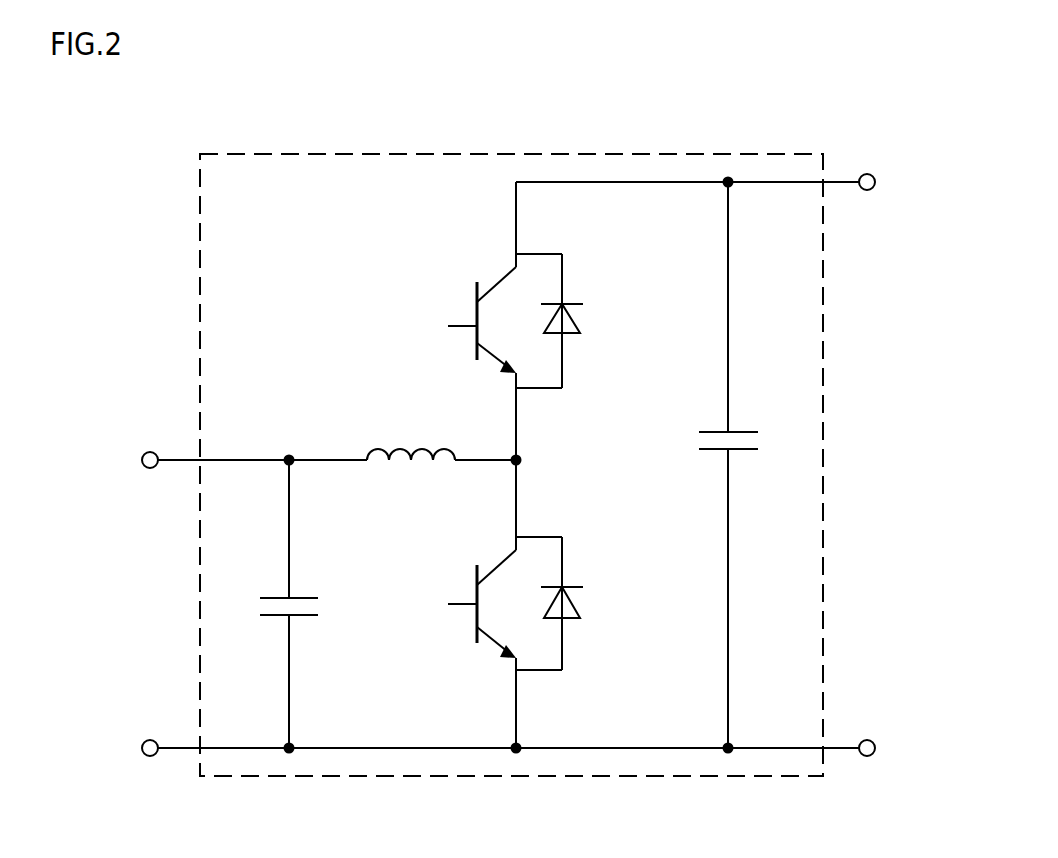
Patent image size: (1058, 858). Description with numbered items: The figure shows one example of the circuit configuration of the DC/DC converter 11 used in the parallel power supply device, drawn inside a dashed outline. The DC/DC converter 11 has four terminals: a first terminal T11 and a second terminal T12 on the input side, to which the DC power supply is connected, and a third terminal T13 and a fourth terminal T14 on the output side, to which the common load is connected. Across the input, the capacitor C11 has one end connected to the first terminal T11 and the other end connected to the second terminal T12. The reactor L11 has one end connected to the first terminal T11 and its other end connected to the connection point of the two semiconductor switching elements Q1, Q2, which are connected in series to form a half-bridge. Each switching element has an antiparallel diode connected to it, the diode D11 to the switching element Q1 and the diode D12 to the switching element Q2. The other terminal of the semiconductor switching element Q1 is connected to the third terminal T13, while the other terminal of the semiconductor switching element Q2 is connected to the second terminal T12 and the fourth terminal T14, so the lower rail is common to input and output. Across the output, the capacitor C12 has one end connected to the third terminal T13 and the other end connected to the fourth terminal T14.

The DC/DC converter 11 is at (479, 153).
The first terminal T11 is at (116, 461).
The second terminal T12 is at (115, 746).
The third terminal T13 is at (904, 182).
The fourth terminal T14 is at (903, 749).
The reactor L11 is at (405, 427).
The capacitor C11 is at (278, 583).
The capacitor C12 is at (741, 427).
The semiconductor switching element Q1 is at (470, 313).
The semiconductor switching element Q2 is at (465, 593).
The antiparallel diode D11 is at (572, 293).
The antiparallel diode D12 is at (572, 578).